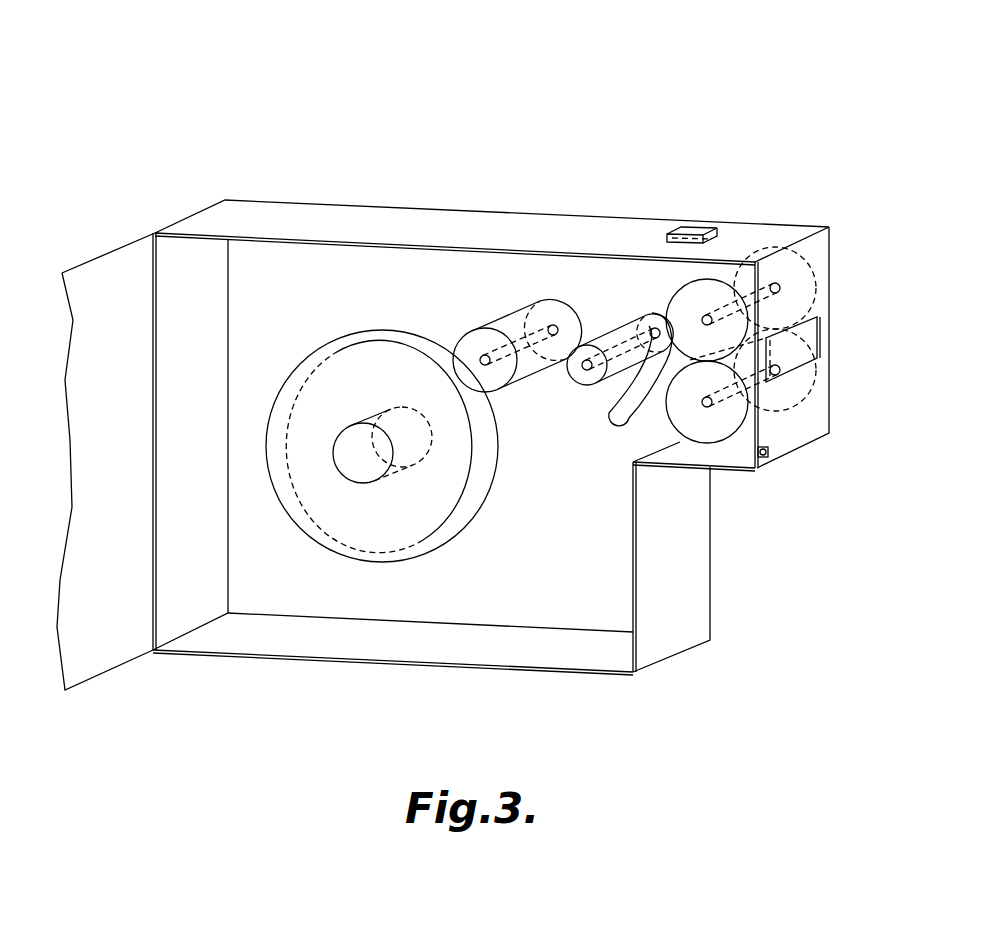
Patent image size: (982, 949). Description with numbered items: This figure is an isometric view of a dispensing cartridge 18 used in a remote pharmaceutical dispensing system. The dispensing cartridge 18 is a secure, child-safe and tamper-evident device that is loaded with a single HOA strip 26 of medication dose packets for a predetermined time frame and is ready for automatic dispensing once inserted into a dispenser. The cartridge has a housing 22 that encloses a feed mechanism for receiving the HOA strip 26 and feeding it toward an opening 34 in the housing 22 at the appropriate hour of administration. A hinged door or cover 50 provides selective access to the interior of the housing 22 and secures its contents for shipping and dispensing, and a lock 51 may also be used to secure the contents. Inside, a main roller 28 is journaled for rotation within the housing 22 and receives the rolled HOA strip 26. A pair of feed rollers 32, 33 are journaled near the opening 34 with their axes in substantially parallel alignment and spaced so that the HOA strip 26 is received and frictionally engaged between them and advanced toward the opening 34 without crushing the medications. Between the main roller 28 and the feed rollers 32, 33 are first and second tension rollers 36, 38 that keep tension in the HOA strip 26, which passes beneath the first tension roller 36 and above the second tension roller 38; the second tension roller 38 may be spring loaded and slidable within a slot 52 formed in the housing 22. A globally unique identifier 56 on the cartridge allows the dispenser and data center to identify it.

The dispensing cartridge 18 is at (221, 97).
The housing 22 is at (356, 218).
The HOA strip 26 is at (398, 345).
The main roller 28 is at (360, 478).
The feed roller 32 is at (715, 293).
The feed roller 33 is at (707, 437).
The opening 34 is at (817, 327).
The first tension roller 36 is at (500, 313).
The second tension roller 38 is at (577, 378).
The hinged door or cover 50 is at (112, 290).
The lock 51 is at (770, 450).
The slot 52 is at (609, 413).
The globally unique identifier (GUI) 56 is at (697, 232).